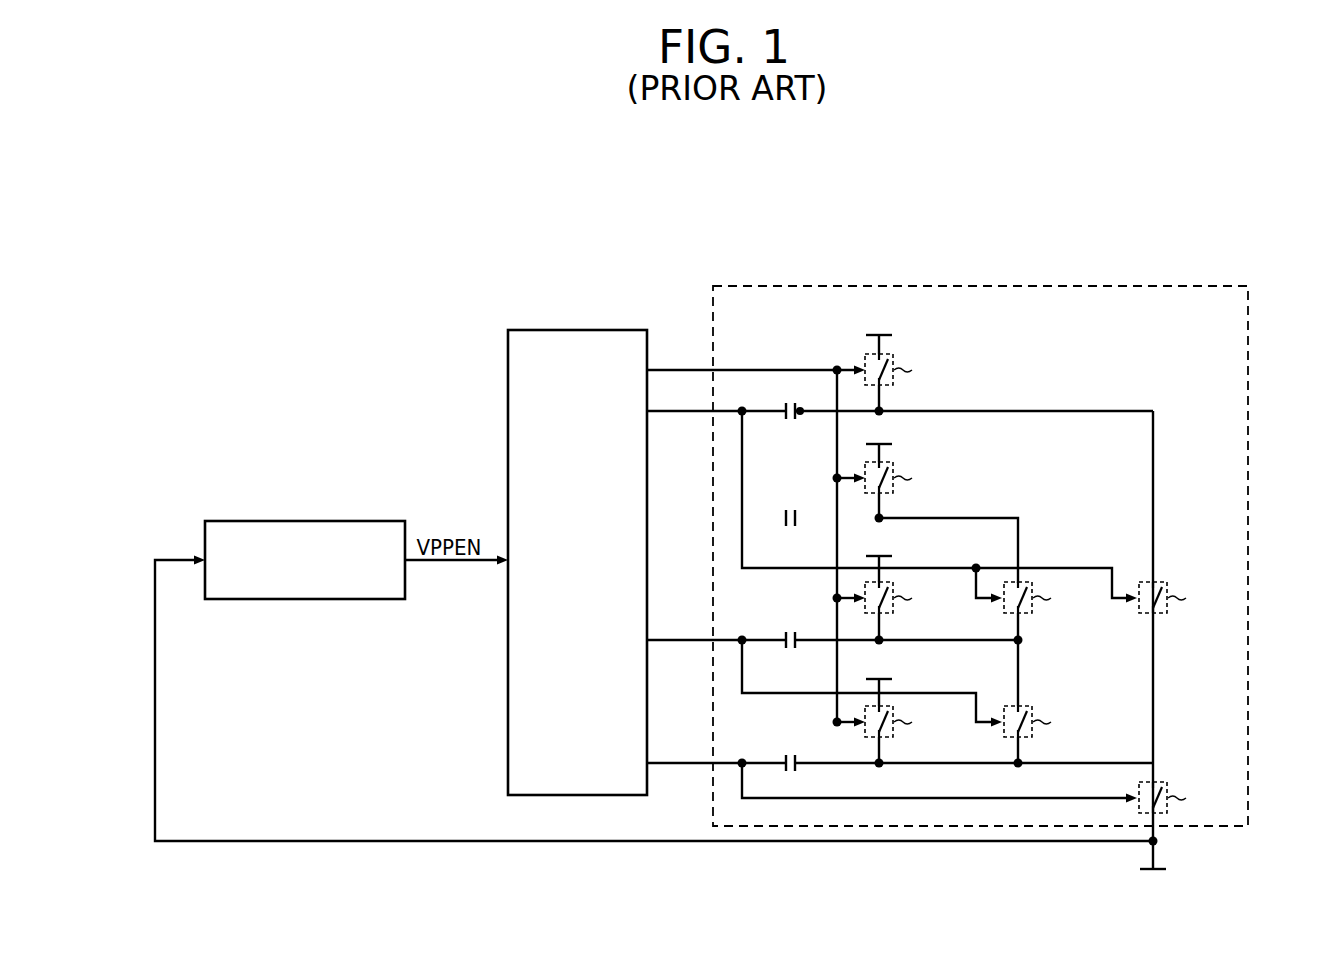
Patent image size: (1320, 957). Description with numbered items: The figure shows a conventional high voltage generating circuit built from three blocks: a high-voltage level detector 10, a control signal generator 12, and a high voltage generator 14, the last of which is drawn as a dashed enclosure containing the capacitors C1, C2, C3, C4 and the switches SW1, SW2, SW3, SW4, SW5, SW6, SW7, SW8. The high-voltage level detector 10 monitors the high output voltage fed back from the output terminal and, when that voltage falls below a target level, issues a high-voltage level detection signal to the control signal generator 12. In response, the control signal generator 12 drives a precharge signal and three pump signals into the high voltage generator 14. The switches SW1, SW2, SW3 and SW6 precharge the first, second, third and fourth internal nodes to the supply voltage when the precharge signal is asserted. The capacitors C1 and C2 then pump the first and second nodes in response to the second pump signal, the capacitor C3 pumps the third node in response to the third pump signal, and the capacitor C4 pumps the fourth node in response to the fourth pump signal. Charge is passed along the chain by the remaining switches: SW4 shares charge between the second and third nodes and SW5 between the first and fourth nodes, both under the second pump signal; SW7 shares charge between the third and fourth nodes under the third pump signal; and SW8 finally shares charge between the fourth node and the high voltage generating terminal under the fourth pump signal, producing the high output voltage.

The high-voltage level detector 10 is at (276, 521).
The control signal generator 12 is at (594, 330).
The high voltage generator 14 is at (1248, 513).
The switch SW1 is at (914, 369).
The switch SW2 is at (914, 477).
The switch SW3 is at (914, 597).
The switch SW4 is at (1053, 597).
The switch SW5 is at (1188, 597).
The switch SW6 is at (914, 721).
The switch SW7 is at (1053, 721).
The switch SW8 is at (1188, 797).
The capacitor C1 is at (790, 397).
The capacitor C2 is at (790, 504).
The capacitor C3 is at (790, 626).
The capacitor C4 is at (790, 749).